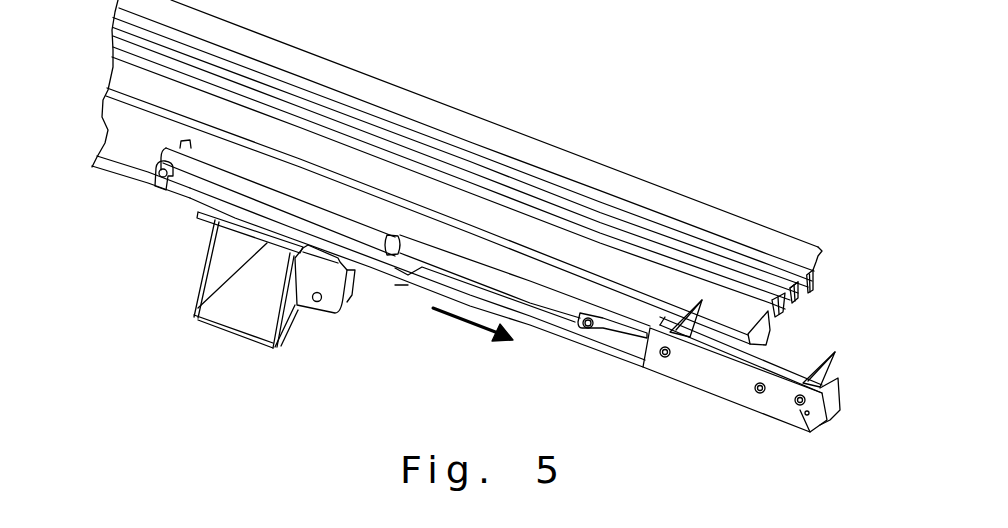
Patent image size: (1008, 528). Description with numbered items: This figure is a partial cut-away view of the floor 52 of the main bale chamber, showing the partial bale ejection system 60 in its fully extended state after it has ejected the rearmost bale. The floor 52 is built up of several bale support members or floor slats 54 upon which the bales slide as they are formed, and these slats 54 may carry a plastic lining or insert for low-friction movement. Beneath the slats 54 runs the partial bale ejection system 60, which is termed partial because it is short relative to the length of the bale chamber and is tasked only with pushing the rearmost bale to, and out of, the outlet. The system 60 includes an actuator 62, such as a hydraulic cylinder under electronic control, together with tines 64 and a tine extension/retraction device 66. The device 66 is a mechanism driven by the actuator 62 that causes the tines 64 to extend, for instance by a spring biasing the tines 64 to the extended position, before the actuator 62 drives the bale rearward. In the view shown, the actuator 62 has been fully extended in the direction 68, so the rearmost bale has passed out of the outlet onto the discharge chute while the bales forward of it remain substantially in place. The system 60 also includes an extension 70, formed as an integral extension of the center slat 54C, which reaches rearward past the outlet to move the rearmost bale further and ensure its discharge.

The floor 52 is at (668, 155).
The floor slats 54 is at (818, 258).
The center slat 54C is at (120, 122).
The partial bale ejection system 60 is at (140, 206).
The actuator 62 is at (205, 177).
The tines 64 is at (817, 377).
The tine extension/retraction device 66 is at (635, 383).
The direction 68 is at (457, 318).
The extension 70 is at (808, 436).